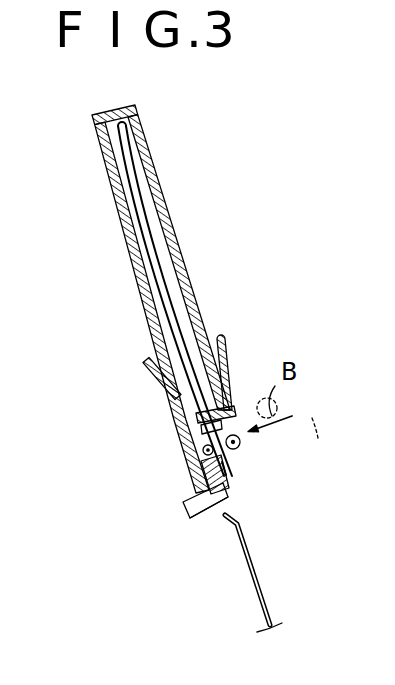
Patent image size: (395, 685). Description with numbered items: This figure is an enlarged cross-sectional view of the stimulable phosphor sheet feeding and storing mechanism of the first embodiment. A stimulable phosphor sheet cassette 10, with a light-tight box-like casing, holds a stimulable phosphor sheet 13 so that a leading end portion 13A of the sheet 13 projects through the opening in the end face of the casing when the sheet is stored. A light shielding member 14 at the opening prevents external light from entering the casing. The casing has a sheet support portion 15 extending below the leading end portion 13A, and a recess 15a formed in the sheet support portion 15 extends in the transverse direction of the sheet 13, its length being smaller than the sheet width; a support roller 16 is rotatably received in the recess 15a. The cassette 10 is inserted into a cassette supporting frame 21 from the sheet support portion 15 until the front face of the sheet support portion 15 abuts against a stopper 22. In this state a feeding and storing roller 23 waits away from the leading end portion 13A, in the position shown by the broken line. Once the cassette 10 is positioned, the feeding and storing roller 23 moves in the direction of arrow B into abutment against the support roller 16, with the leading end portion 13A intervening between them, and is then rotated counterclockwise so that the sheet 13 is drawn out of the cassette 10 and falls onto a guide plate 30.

The stimulable phosphor sheet cassette 10 is at (169, 187).
The stimulable phosphor sheet 13 is at (136, 228).
The leading end portion 13A is at (230, 469).
The light shielding member 14 is at (160, 390).
The cassette supporting frame 21 is at (226, 336).
The support roller 16 is at (200, 450).
The recess 15a is at (190, 468).
The sheet support portion 15 is at (229, 468).
The stopper 22 is at (193, 520).
The feeding and storing roller 23 is at (238, 450).
The guide plate 30 is at (242, 570).